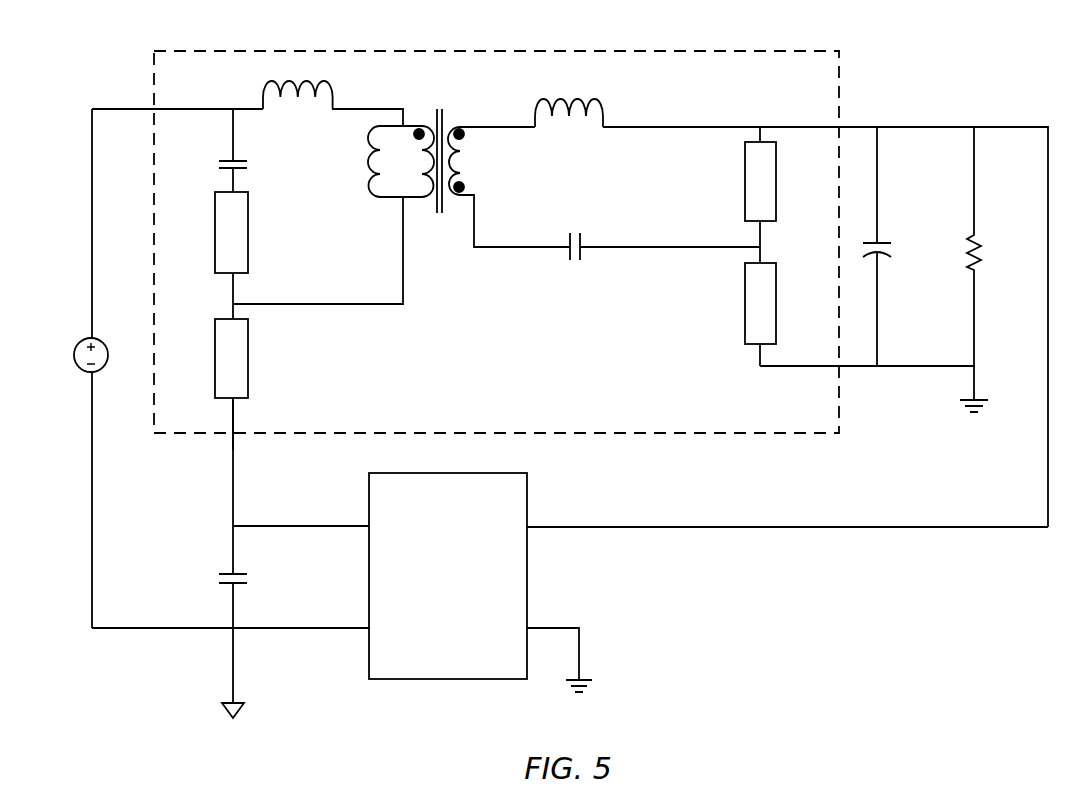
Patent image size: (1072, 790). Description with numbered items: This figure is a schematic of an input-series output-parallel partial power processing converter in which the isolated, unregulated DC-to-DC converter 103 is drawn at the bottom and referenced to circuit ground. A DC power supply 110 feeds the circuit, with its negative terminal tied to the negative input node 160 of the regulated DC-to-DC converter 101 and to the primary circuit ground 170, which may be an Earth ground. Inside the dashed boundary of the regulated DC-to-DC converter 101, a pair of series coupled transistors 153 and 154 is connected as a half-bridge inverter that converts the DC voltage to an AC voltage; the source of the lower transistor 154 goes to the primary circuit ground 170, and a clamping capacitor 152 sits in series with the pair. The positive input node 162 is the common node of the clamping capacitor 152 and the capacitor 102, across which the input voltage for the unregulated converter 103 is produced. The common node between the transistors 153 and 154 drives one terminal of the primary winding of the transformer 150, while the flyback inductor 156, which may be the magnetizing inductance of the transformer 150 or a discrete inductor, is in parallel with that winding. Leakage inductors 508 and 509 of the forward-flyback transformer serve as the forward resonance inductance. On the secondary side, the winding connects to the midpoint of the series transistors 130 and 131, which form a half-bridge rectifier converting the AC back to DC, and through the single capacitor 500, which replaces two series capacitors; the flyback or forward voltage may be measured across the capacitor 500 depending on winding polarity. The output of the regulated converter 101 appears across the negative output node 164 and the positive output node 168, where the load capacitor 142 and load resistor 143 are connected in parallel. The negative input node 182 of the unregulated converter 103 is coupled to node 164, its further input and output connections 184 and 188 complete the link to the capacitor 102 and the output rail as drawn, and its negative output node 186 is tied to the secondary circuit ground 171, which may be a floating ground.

The regulated DC-to-DC converter 101 is at (779, 49).
The capacitor 102 is at (243, 583).
The isolated (unregulated) DC-to-DC converter 103 is at (510, 472).
The DC power supply 110 is at (80, 342).
The transistor 130 is at (776, 185).
The transistor 131 is at (776, 292).
The load capacitor 142 is at (886, 243).
The load resistor 143 is at (978, 235).
The transformer 150 is at (442, 182).
The clamping capacitor 152 is at (248, 165).
The transistor 153 is at (248, 253).
The transistor 154 is at (248, 387).
The flyback inductor 156 is at (366, 147).
The negative input node 160 is at (235, 416).
The positive input node 162 is at (185, 107).
The negative output node 164 is at (793, 368).
The positive output node 168 is at (790, 125).
The primary circuit ground 170 is at (243, 705).
The secondary circuit ground 171 is at (990, 400).
The negative input node 182 is at (320, 627).
The controller input 184 is at (320, 525).
The negative output node 186 is at (530, 627).
The controller output 188 is at (530, 526).
The capacitor 500 is at (580, 240).
The forward-flyback transformer leakage inductor 508 is at (310, 80).
The forward-flyback transformer leakage inductor 509 is at (598, 100).